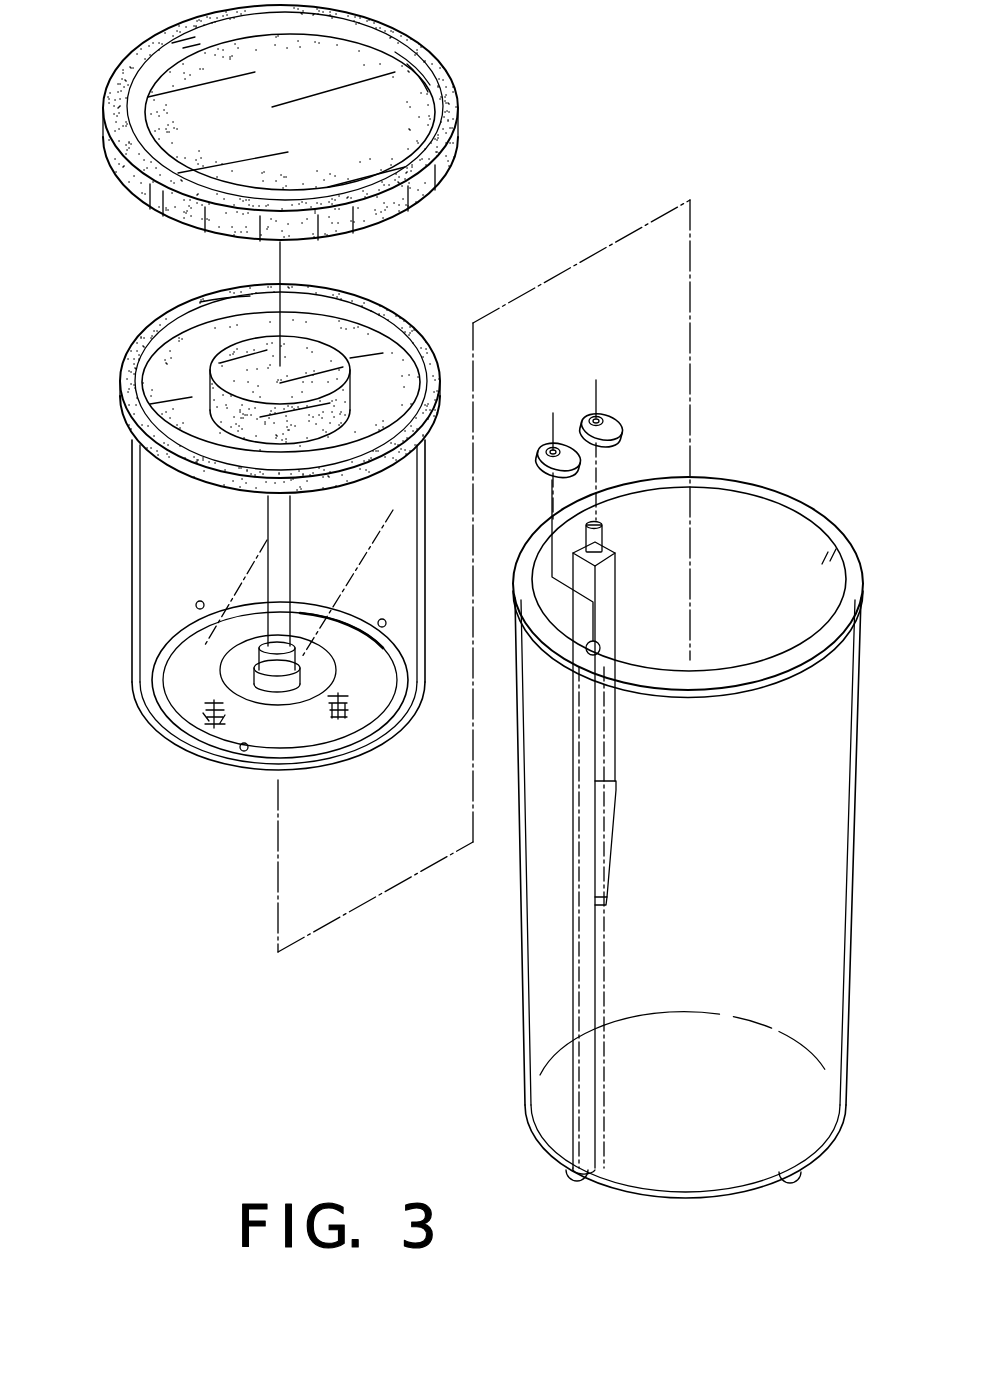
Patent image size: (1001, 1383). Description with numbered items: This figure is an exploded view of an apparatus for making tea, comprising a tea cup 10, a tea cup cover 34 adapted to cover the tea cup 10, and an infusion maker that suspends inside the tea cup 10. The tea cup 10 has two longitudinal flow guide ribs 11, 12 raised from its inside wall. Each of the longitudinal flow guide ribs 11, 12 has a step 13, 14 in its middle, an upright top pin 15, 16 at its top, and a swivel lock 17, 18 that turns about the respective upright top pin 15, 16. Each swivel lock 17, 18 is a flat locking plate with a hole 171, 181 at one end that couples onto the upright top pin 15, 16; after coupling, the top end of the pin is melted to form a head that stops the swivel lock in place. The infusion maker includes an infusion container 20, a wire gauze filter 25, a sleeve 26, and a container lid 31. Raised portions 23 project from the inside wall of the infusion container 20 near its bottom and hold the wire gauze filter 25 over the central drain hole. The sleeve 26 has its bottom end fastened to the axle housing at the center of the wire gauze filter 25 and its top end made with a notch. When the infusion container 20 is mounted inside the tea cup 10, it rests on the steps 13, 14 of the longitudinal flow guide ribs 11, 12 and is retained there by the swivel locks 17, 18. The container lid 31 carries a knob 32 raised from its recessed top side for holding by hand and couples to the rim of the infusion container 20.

The tea cup 10 is at (852, 827).
The longitudinal flow guide rib 11 is at (572, 901).
The longitudinal flow guide rib 12 is at (587, 988).
The step 13 is at (616, 783).
The step 14 is at (610, 898).
The upright top pin 15 is at (604, 537).
The upright top pin 16 is at (600, 647).
The swivel lock 17 is at (614, 419).
The hole 171 is at (597, 416).
The swivel lock 18 is at (540, 453).
The hole 181 is at (556, 449).
The infusion container 20 is at (132, 538).
The raised portions 23 is at (197, 608).
The wire gauze filter 25 is at (197, 698).
The sleeve 26 is at (288, 541).
The container lid 31 is at (168, 314).
The knob 32 is at (206, 402).
The tea cup cover 34 is at (455, 91).